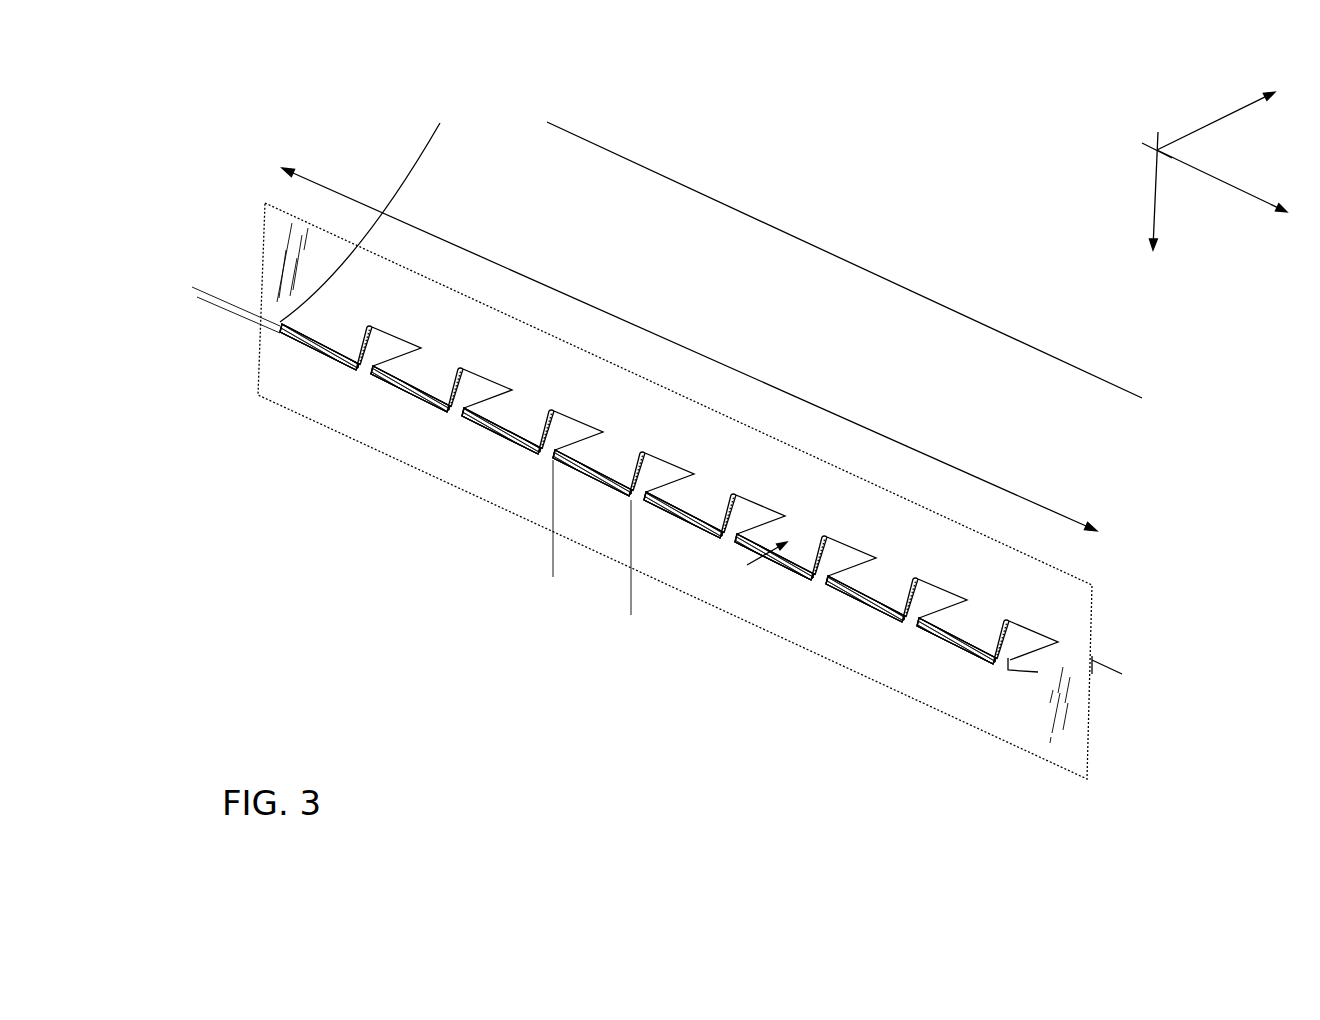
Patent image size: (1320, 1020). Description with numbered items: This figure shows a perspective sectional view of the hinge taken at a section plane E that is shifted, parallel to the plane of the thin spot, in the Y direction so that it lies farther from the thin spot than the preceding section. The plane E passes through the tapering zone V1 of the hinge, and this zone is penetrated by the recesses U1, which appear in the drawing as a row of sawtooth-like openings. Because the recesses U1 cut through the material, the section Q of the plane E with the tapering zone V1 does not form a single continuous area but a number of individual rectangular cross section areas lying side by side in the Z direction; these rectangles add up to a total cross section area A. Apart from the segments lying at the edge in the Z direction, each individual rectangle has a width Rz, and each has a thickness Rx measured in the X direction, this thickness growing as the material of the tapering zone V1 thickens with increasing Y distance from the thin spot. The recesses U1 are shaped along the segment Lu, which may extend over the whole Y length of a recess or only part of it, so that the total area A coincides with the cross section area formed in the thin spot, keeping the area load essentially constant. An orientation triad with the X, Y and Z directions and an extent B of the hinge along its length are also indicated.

The tapering zone V1 is at (437, 173).
The recesses U1 is at (485, 387).
The strip direction B is at (651, 330).
The thickness of the partial cross section Rx is at (222, 357).
The section Q is at (397, 383).
The cross section area A is at (485, 426).
The width of the rectangular areas Rz is at (628, 596).
The segment Lu is at (739, 567).
The section plane E is at (860, 655).
The X direction X is at (1135, 199).
The Y direction Y is at (1216, 101).
The Z direction Z is at (1214, 204).